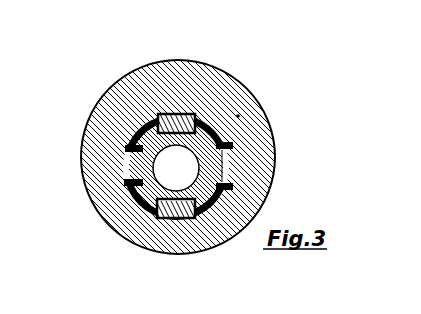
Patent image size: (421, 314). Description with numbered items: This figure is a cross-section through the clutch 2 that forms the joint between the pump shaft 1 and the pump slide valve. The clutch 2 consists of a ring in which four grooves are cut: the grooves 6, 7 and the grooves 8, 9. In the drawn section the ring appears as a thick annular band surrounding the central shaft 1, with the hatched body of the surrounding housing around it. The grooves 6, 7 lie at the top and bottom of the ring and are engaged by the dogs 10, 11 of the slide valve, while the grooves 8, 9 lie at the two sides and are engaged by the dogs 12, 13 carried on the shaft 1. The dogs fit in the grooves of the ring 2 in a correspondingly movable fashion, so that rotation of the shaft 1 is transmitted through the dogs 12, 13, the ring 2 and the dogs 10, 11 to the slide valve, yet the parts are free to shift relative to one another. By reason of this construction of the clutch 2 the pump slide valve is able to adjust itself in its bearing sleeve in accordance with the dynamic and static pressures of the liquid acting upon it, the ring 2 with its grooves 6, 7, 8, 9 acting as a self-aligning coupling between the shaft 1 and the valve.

The dog 10 is at (138, 102).
The groove 8 is at (140, 162).
The dog 12 is at (132, 172).
The clutch 2 is at (212, 142).
The groove 9 is at (212, 158).
The dog 13 is at (216, 173).
The groove 6 is at (196, 113).
The groove 7 is at (174, 212).
The dog 11 is at (184, 212).
The pump shaft 1 is at (238, 116).